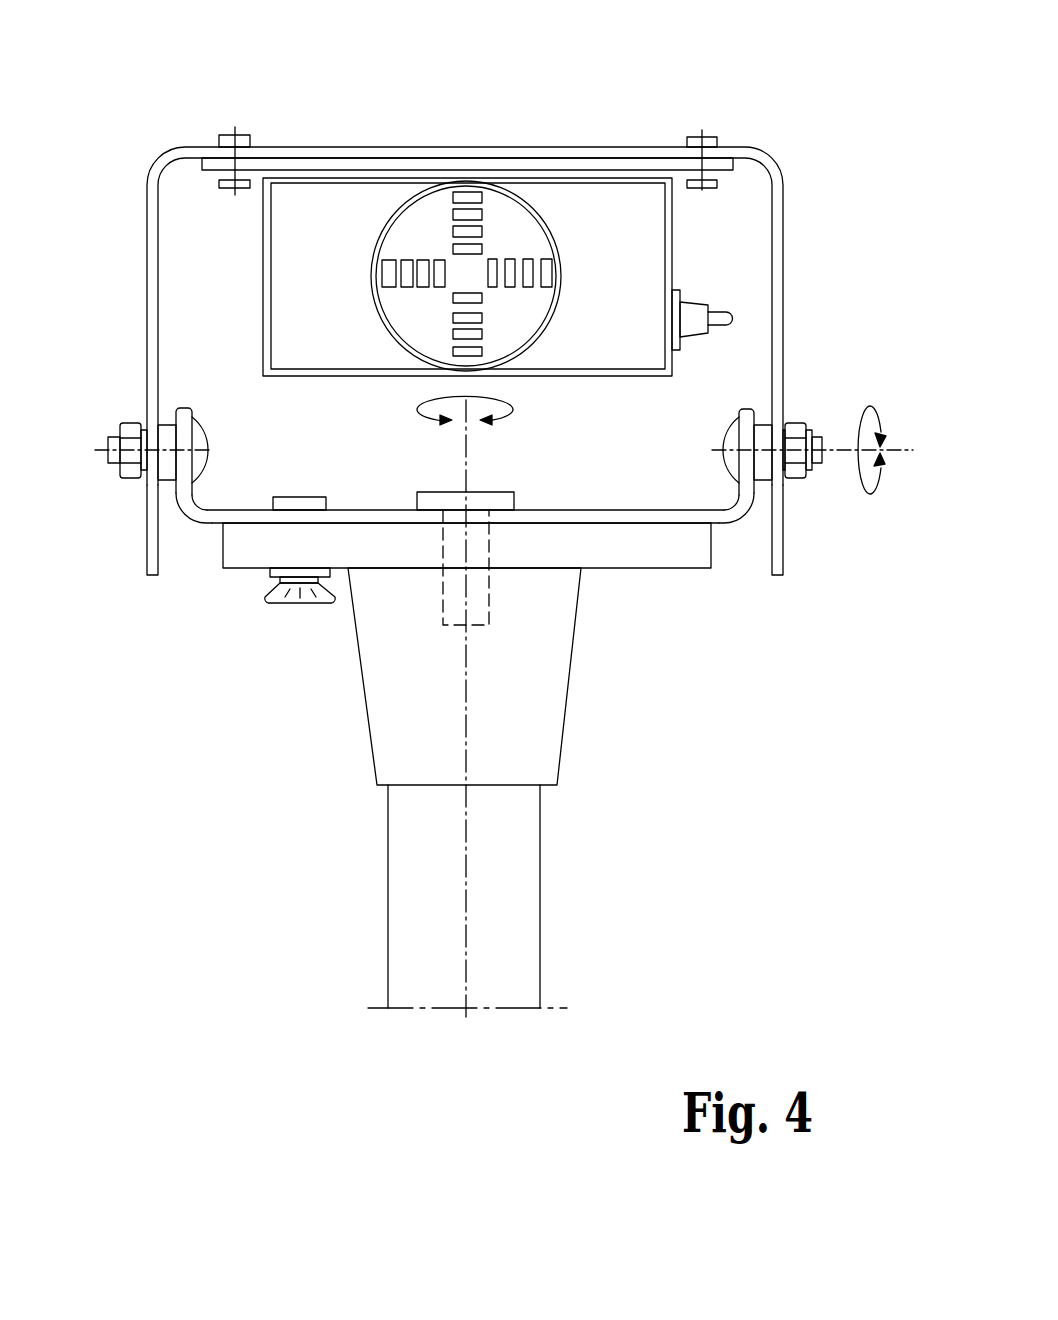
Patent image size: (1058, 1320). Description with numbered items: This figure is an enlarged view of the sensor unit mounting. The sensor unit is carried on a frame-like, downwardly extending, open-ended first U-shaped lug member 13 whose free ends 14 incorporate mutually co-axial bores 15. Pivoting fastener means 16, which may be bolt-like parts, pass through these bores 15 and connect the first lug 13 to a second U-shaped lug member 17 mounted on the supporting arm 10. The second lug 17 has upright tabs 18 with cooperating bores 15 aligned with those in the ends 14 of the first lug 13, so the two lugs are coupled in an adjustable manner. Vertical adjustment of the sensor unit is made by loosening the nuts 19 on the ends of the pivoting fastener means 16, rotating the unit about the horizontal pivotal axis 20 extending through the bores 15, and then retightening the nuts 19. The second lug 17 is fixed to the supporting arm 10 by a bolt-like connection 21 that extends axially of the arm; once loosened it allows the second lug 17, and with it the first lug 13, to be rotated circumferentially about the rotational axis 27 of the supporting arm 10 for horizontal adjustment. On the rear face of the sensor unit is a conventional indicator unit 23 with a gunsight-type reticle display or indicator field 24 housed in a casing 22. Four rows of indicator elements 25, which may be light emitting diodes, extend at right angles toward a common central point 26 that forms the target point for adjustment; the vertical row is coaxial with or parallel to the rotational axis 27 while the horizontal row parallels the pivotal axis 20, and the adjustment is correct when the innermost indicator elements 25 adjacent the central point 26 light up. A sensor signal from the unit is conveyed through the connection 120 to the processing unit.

The supporting arm 10 is at (540, 870).
The first U-shaped lug member 13 is at (783, 213).
The free ends 14 is at (146, 543).
The bores 15 is at (133, 488).
The pivoting fastener means 16 is at (168, 428).
The second U-shaped lug member 17 is at (212, 523).
The upright tabs 18 is at (175, 490).
The nuts 19 is at (123, 420).
The pivotal axis 20 is at (897, 448).
The bolt-like connection 21 is at (490, 595).
The display housing 22 is at (618, 192).
The indicator unit 23 is at (535, 146).
The indicator field 24 is at (415, 208).
The indicator elements 25 is at (523, 258).
The central point 26 is at (455, 270).
The rotational axis 27 is at (467, 833).
The connection 120 is at (725, 320).